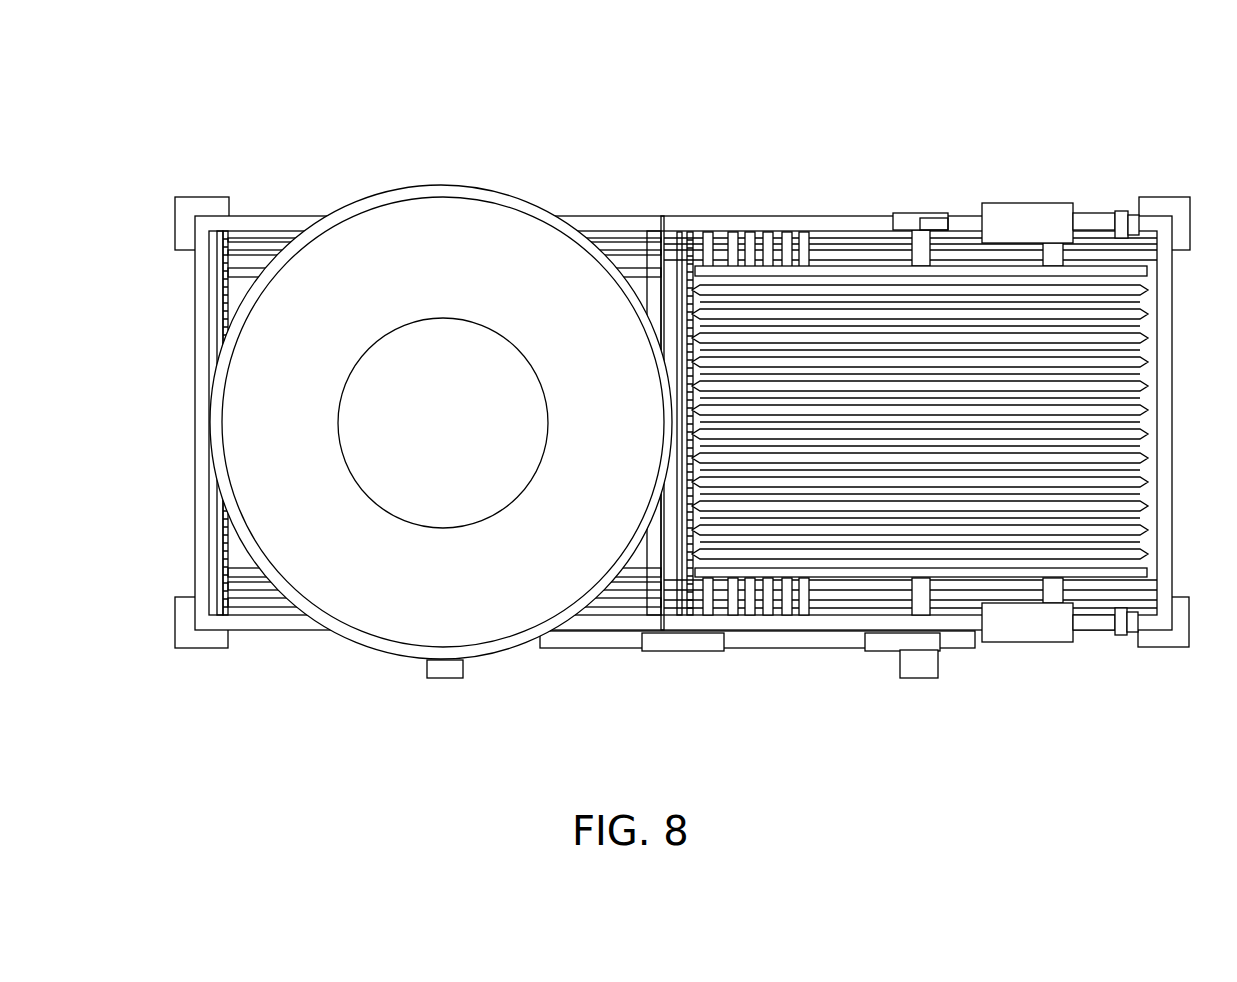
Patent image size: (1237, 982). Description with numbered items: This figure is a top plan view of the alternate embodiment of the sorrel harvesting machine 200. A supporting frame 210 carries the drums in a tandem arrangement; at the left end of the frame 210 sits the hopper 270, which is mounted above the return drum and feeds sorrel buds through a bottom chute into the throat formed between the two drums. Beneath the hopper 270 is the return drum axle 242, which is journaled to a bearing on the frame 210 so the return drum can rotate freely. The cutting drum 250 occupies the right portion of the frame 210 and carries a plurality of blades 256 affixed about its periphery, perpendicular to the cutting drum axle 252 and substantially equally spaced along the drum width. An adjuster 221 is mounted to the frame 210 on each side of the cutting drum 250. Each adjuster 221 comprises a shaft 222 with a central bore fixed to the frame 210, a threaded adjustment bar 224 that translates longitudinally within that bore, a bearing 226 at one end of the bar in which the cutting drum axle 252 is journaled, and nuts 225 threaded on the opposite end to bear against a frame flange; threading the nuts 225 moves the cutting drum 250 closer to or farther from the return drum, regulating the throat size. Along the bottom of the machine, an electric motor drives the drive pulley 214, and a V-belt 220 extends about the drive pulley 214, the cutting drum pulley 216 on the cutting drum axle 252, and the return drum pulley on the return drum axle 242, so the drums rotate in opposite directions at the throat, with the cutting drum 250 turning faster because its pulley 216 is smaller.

The sorrel harvesting machine 200 is at (390, 114).
The supporting frame 210 is at (287, 216).
The drive pulley 214 is at (680, 652).
The cutting drum pulley 216 is at (880, 652).
The V-belt 220 is at (790, 650).
The adjuster 221 is at (1039, 424).
The shaft 222 is at (1000, 203).
The threaded adjustment bar 224 is at (1158, 212).
The nuts 225 is at (1130, 210).
The bearing 226 is at (917, 213).
The return drum axle 242 is at (448, 680).
The cutting drum 250 is at (962, 421).
The cutting drum axle 252 is at (917, 680).
The blades 256 is at (1152, 340).
The hopper 270 is at (355, 645).